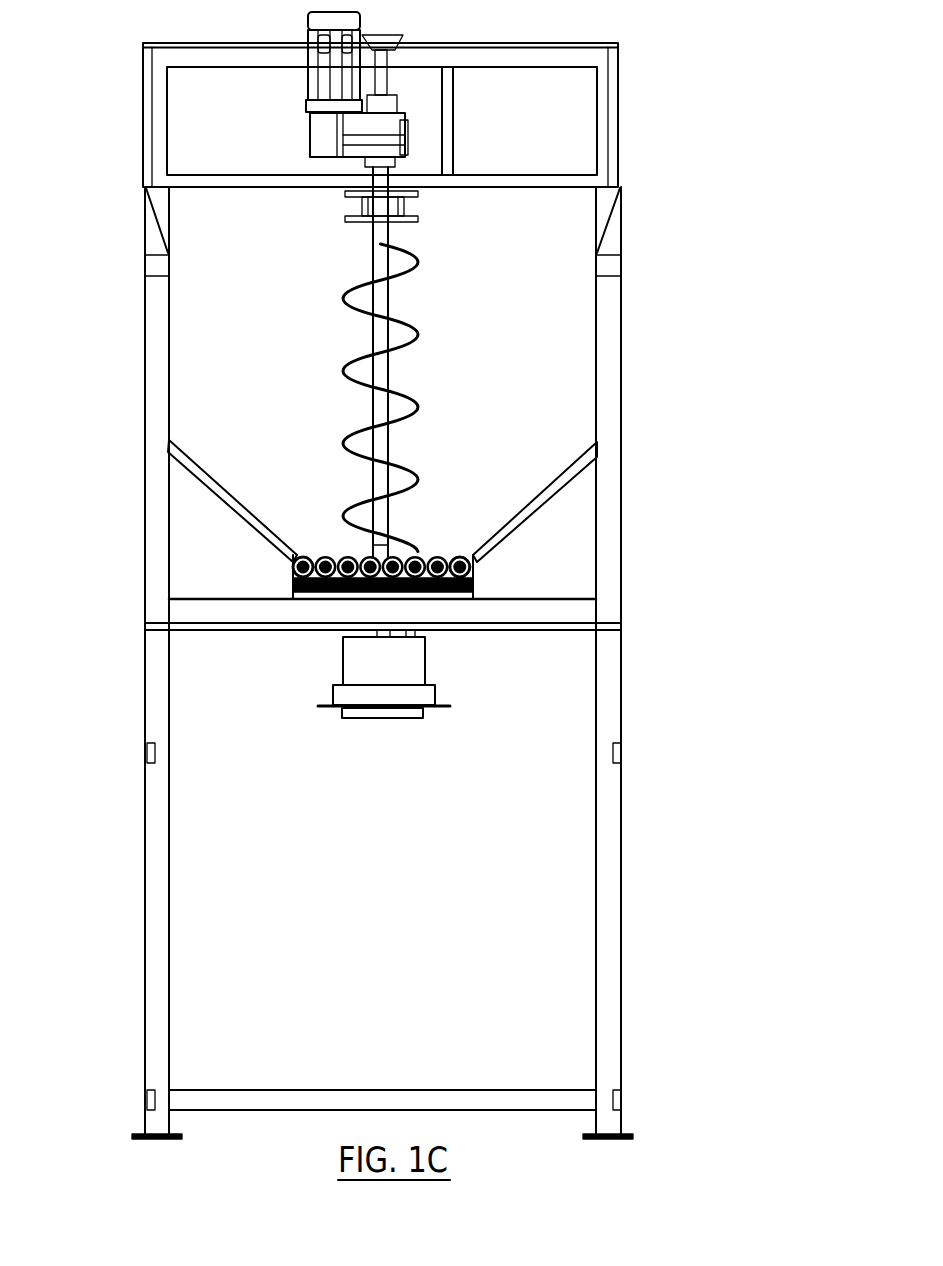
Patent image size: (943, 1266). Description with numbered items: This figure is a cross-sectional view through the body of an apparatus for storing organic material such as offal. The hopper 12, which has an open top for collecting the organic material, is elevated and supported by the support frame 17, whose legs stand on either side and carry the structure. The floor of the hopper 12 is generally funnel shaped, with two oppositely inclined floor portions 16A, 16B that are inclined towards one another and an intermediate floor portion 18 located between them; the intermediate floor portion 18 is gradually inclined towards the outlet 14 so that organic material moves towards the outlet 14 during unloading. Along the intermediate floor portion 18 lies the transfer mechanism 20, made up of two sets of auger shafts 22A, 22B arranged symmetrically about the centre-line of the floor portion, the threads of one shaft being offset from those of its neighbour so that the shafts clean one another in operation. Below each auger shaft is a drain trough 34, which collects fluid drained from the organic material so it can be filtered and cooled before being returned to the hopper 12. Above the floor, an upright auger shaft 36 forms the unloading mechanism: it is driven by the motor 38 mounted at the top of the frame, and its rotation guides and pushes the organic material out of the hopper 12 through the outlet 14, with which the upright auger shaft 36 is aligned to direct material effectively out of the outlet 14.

The hopper 12 is at (560, 242).
The outlet 14 is at (415, 660).
The inclined floor portion 16A is at (219, 497).
The inclined floor portion 16B is at (543, 497).
The support frame 17 is at (150, 697).
The intermediate floor portion 18 is at (449, 522).
The transfer mechanism 20 is at (268, 568).
The auger shaft 22A is at (322, 586).
The auger shaft 22B is at (447, 597).
The drain trough 34 is at (352, 605).
The upright auger shaft 36 is at (418, 340).
The motor 38 is at (309, 82).